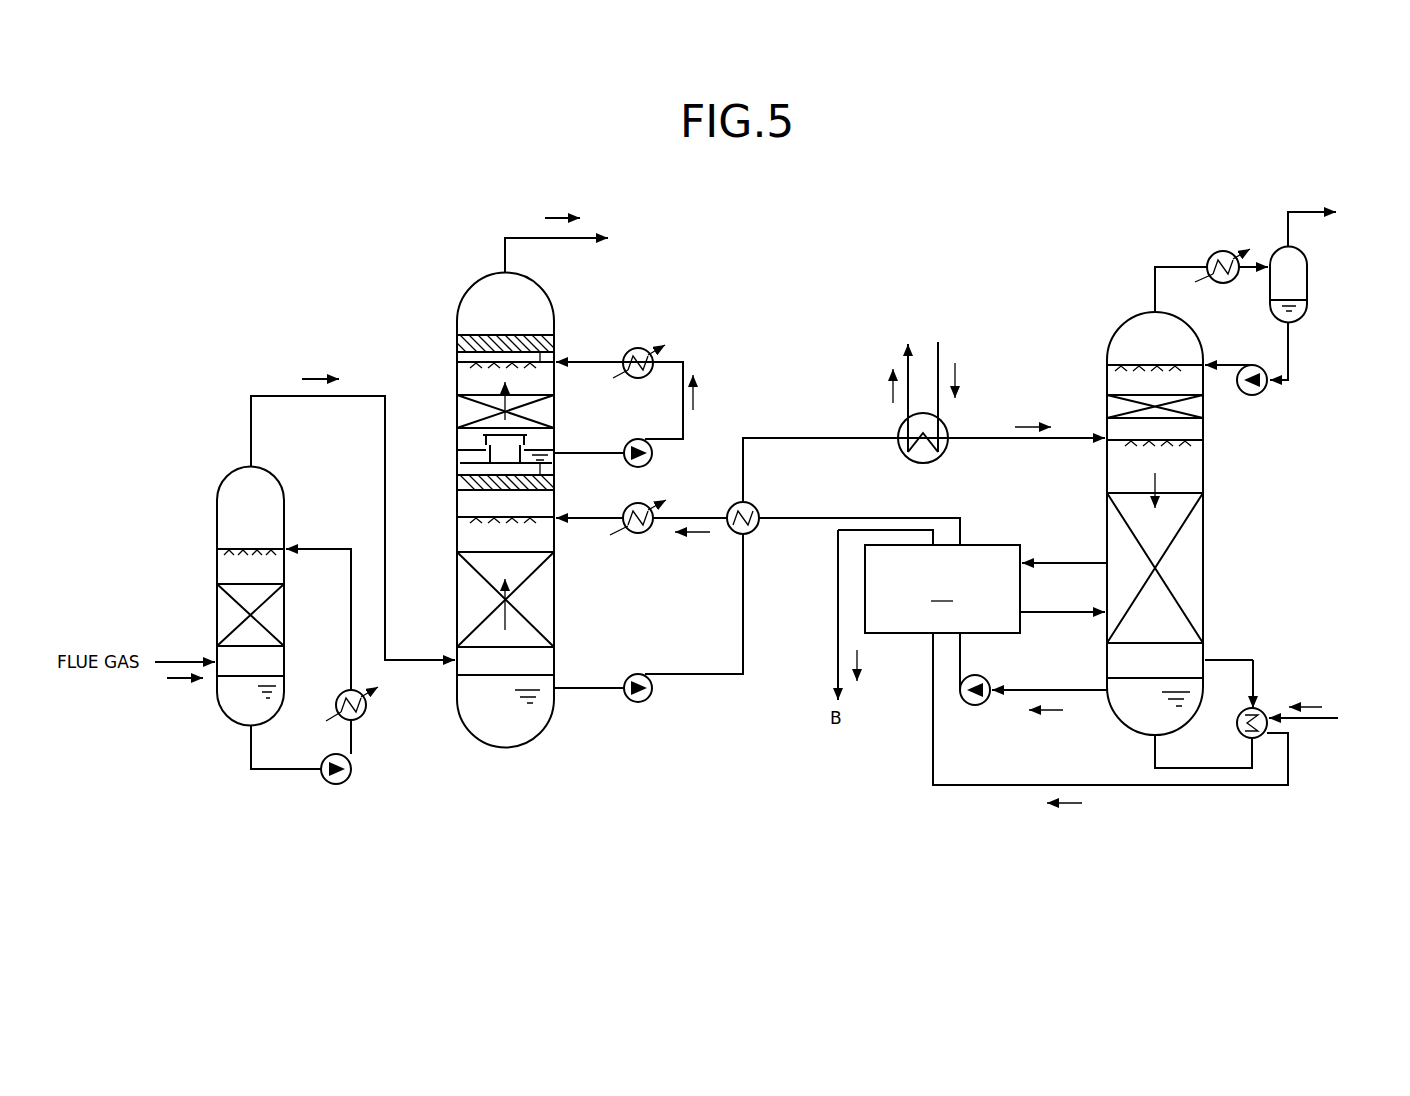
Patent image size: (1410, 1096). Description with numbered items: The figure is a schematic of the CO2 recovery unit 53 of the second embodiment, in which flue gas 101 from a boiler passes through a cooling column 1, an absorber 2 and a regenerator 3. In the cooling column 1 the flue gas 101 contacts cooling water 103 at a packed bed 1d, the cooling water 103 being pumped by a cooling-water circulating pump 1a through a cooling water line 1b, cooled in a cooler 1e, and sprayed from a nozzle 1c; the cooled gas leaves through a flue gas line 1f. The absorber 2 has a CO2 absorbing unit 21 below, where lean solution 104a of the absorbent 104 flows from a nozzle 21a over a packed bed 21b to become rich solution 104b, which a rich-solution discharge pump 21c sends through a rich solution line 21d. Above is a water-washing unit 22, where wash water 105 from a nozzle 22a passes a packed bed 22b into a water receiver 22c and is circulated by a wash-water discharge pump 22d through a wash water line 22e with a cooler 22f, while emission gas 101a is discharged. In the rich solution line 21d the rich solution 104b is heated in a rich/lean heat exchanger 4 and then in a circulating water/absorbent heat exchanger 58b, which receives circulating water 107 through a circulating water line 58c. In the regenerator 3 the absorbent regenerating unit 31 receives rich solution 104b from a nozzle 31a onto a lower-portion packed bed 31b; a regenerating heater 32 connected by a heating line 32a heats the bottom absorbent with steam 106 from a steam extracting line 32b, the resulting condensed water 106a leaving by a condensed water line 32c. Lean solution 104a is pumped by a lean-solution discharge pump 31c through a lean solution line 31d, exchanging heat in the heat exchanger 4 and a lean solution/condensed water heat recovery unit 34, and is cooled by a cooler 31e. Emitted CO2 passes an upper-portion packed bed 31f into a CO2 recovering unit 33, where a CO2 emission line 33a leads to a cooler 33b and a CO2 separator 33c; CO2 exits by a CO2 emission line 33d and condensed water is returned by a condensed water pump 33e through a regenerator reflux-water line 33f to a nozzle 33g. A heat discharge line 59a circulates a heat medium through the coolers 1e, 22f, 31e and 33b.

The cooling column 1 is at (216, 482).
The cooling-water circulating pump 1a is at (336, 785).
The cooling water line 1b is at (274, 770).
The nozzle 1c is at (259, 546).
The packed bed 1d is at (222, 615).
The cooler 1e is at (366, 718).
The flue gas line 1f is at (288, 398).
The absorber 2 is at (456, 292).
The regenerator 3 is at (1115, 318).
The rich/lean heat exchanger 4 is at (757, 505).
The CO2 absorbing unit 21 is at (566, 602).
The nozzle 21a is at (480, 508).
The packed bed 21b is at (468, 583).
The rich-solution discharge pump 21c is at (638, 703).
The rich solution line 21d is at (697, 675).
The water-washing unit 22 is at (445, 377).
The nozzle 22a is at (546, 352).
The packed bed 22b is at (547, 412).
The water receiver 22c is at (553, 478).
The wash-water discharge pump 22d is at (653, 455).
The wash water line 22e is at (686, 424).
The cooler 22f is at (638, 348).
The absorbent regenerating unit 31 is at (1213, 568).
The nozzle 31a is at (1187, 435).
The lower-portion packed bed 31b is at (1197, 528).
The lean-solution discharge pump 31c is at (975, 706).
The lean solution line 31d is at (1010, 687).
The cooler 31e is at (638, 534).
The upper-portion packed bed 31f is at (1113, 407).
The regenerating heater 32 is at (1263, 708).
The heating line 32a is at (1232, 658).
The steam extracting line 32b is at (1317, 720).
The condensed water line 32c is at (975, 786).
The CO2 recovering unit 33 is at (1265, 226).
The CO2 emission line 33a is at (1172, 266).
The cooler 33b is at (1222, 250).
The CO2 separator 33c is at (1307, 277).
The CO2 emission line 33d is at (1307, 211).
The condensed water pump 33e is at (1266, 397).
The regenerator reflux-water line 33f is at (1288, 350).
The nozzle 33g is at (1175, 362).
The lean solution/condensed water heat recovery unit 34 is at (986, 589).
The CO2 recovery unit 53 is at (894, 207).
The circulating water/absorbent heat exchanger 58b is at (947, 457).
The circulating water line 58c is at (917, 455).
The heat discharge line 59a is at (344, 694).
The flue gas 101 is at (178, 686).
The emission gas 101a is at (566, 216).
The cooling water 103 is at (337, 613).
The absorbent 104 is at (693, 540).
The lean solution 104a is at (1125, 675).
The rich solution 104b is at (540, 668).
The wash water 105 is at (697, 394).
The steam 106 is at (1305, 703).
The condensed water 106a is at (862, 666).
The circulating water 107 is at (891, 392).